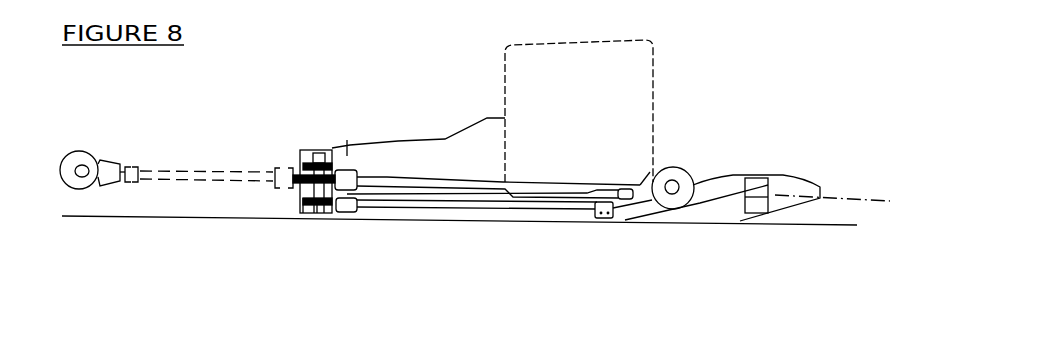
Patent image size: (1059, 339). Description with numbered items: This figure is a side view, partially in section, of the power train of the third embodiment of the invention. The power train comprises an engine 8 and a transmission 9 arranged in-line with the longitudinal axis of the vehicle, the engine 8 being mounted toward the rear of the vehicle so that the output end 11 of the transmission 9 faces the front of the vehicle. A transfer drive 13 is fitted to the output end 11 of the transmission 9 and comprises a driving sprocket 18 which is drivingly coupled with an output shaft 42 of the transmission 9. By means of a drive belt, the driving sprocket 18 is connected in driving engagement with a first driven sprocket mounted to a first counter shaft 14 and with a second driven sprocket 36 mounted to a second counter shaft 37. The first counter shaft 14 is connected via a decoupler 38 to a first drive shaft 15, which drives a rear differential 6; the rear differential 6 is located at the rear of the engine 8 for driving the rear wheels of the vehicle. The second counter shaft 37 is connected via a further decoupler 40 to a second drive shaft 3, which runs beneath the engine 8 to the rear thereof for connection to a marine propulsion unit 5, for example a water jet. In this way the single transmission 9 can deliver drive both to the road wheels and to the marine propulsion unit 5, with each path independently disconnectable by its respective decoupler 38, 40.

The second drive shaft 3 is at (472, 210).
The marine propulsion unit 5 is at (723, 198).
The rear differential 6 is at (678, 175).
The engine 8 is at (567, 126).
The transmission 9 is at (413, 153).
The output end 11 is at (347, 140).
The transfer drive 13 is at (327, 153).
The first counter shaft 14 is at (298, 182).
The first drive shaft 15 is at (558, 185).
The driving sprocket 18 is at (299, 150).
The second driven sprocket 36 is at (317, 217).
The second counter shaft 37 is at (303, 208).
The decoupler 38 is at (352, 185).
The decoupler 40 is at (344, 212).
The output shaft 42 is at (297, 165).